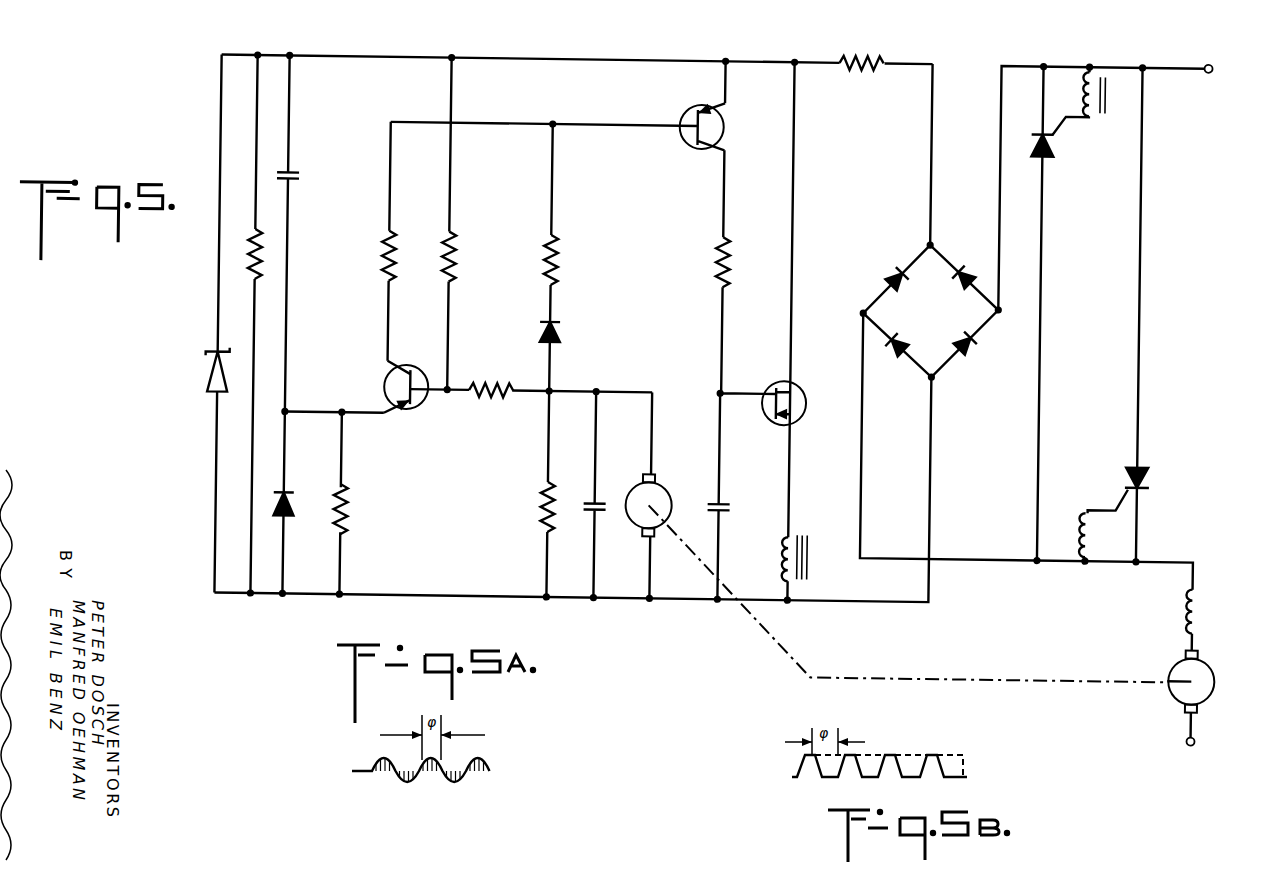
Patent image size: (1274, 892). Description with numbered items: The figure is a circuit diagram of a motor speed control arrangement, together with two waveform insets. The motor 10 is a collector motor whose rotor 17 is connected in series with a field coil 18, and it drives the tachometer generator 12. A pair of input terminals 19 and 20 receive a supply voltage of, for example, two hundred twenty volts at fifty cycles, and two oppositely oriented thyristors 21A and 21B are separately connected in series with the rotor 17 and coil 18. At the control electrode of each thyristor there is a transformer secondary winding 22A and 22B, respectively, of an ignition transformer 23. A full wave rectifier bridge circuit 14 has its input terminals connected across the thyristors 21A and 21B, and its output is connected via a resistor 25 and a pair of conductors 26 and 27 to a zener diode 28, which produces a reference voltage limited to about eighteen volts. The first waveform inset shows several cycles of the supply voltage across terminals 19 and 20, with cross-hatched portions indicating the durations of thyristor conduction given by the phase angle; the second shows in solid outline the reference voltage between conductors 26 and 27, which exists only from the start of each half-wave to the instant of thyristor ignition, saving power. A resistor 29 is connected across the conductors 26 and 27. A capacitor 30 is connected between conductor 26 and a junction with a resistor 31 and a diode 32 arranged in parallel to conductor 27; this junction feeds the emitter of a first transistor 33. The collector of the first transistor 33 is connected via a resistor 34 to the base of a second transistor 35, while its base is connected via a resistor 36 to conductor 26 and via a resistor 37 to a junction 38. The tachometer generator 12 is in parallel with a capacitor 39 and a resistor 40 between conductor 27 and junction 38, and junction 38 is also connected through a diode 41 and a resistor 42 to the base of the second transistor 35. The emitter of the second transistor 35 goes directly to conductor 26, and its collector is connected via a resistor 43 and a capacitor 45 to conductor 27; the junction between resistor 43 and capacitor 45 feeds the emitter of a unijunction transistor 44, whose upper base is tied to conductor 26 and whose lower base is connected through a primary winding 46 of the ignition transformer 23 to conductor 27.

The motor 10 is at (1189, 689).
The tachometer generator 12 is at (663, 483).
The full wave rectifier bridge circuit 14 is at (904, 245).
The rotor 17 is at (1217, 668).
The field coil 18 is at (1204, 601).
The input terminal 19 is at (1209, 62).
The input terminal 20 is at (1202, 731).
The thyristor 21A is at (1055, 145).
The thyristor 21B is at (1150, 476).
The transformer secondary winding 22A is at (1078, 66).
The transformer secondary winding 22B is at (1077, 514).
The ignition transformer 23 is at (812, 523).
The resistor 25 is at (864, 56).
The conductor 26 is at (600, 53).
The conductor 27 is at (614, 603).
The zener diode 28 is at (208, 393).
The resistor 29 is at (239, 261).
The capacitor 30 is at (298, 175).
The resistor 31 is at (352, 502).
The diode 32 is at (299, 497).
The first transistor 33 is at (411, 419).
The resistor 34 is at (380, 262).
The second transistor 35 is at (685, 112).
The resistor 36 is at (440, 262).
The resistor 37 is at (506, 403).
The junction 38 is at (555, 390).
The capacitor 39 is at (604, 496).
The resistor 40 is at (542, 521).
The diode 41 is at (562, 338).
The resistor 42 is at (540, 266).
The resistor 43 is at (712, 262).
The unijunction transistor 44 is at (778, 381).
The capacitor 45 is at (734, 497).
The primary winding 46 is at (782, 552).